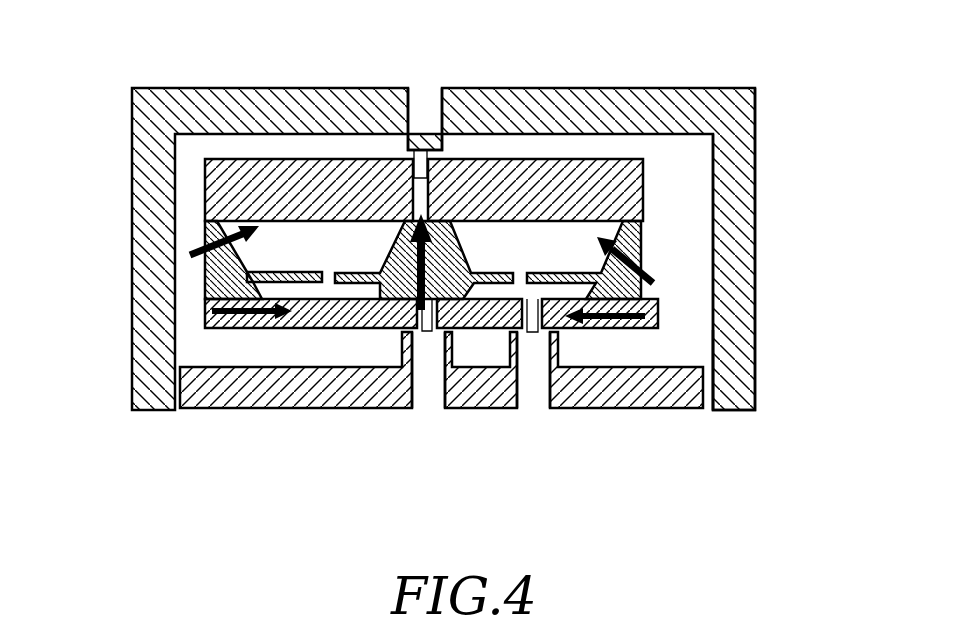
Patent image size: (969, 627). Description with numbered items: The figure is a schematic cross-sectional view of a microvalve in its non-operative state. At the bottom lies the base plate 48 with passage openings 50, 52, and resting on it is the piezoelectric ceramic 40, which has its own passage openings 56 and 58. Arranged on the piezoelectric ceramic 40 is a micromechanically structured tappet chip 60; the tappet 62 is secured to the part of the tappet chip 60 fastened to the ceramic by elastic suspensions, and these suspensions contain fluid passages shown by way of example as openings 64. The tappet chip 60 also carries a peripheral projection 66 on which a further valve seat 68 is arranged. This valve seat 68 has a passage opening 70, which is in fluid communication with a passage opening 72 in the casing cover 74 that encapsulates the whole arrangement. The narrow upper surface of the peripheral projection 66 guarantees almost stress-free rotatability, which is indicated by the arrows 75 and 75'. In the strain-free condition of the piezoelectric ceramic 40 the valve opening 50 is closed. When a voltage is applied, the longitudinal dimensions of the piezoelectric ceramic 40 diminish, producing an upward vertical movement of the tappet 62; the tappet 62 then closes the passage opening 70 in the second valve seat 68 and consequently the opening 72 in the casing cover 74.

The piezoelectric ceramic 40 is at (688, 410).
The base plate 48 is at (755, 412).
The passage opening 50 is at (435, 383).
The passage opening 52 is at (530, 397).
The passage opening 56 is at (424, 331).
The passage opening 58 is at (528, 332).
The tappet chip 60 is at (710, 387).
The tappet 62 is at (457, 265).
The openings 64 is at (333, 284).
The peripheral projection 66 is at (203, 282).
The valve seat 68 is at (643, 177).
The passage opening 70 is at (413, 197).
The passage opening 72 is at (422, 107).
The casing cover 74 is at (733, 302).
The arrow 75 is at (709, 246).
The arrow 75' is at (147, 253).